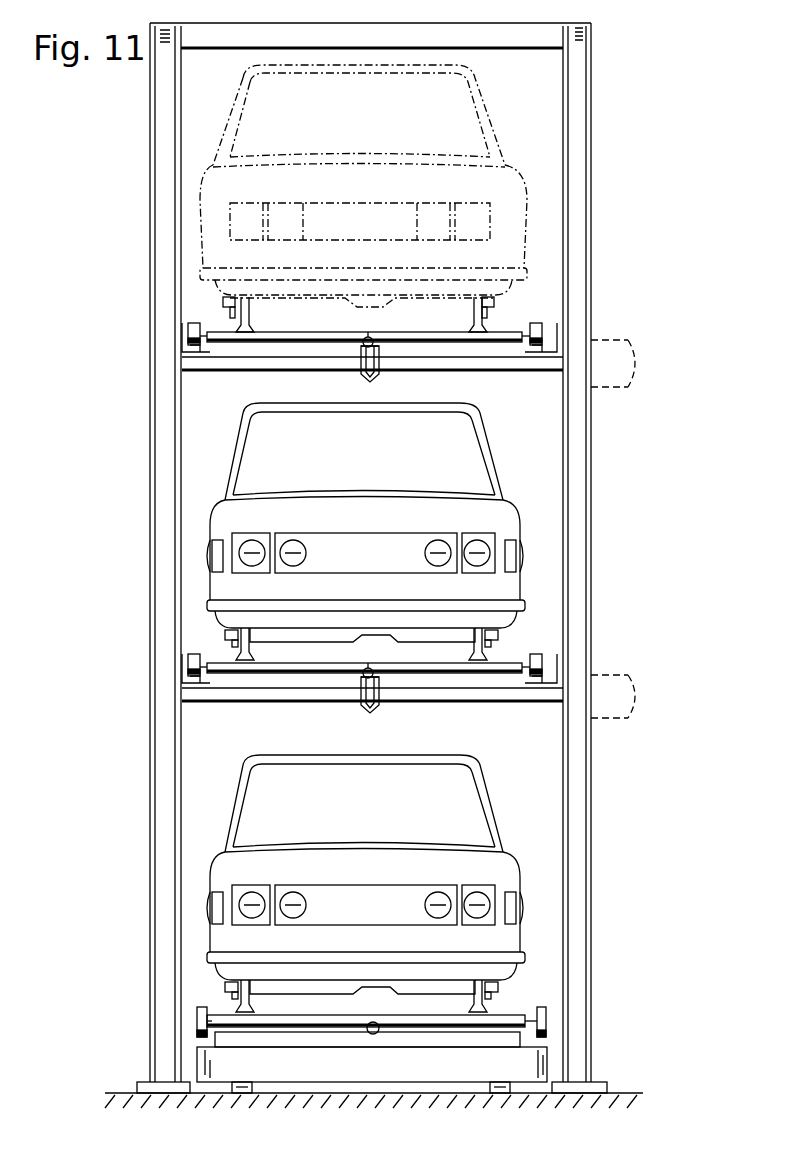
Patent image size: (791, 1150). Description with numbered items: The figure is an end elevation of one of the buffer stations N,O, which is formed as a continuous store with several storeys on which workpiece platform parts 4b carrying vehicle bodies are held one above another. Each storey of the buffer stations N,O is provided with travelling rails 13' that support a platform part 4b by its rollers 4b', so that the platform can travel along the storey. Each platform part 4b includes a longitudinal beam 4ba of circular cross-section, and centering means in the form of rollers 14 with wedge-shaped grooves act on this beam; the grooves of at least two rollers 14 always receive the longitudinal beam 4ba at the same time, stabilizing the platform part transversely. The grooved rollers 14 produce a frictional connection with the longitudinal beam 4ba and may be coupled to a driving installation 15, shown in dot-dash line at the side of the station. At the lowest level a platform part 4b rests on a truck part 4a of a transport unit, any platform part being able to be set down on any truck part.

The buffer stations N,O is at (613, 66).
The truck part 4a is at (535, 1057).
The workpiece platform part 4b is at (372, 657).
The rollers 4b' is at (373, 652).
The longitudinal beam 4ba is at (376, 340).
The travelling rails 13' is at (369, 536).
The grooved rollers 14 is at (370, 383).
The driving installation 15 is at (618, 388).